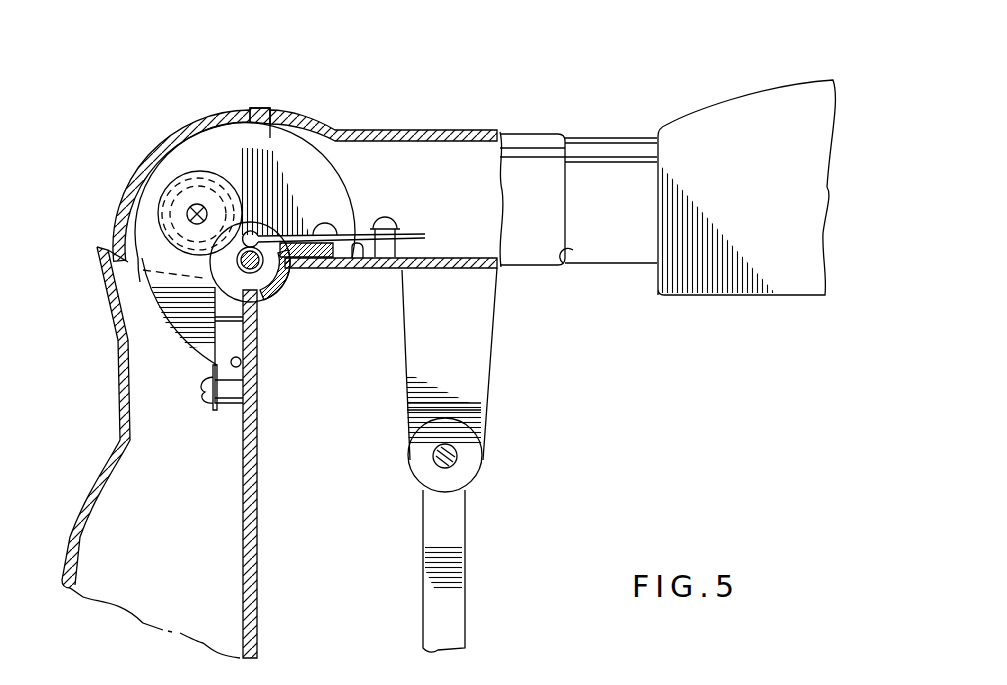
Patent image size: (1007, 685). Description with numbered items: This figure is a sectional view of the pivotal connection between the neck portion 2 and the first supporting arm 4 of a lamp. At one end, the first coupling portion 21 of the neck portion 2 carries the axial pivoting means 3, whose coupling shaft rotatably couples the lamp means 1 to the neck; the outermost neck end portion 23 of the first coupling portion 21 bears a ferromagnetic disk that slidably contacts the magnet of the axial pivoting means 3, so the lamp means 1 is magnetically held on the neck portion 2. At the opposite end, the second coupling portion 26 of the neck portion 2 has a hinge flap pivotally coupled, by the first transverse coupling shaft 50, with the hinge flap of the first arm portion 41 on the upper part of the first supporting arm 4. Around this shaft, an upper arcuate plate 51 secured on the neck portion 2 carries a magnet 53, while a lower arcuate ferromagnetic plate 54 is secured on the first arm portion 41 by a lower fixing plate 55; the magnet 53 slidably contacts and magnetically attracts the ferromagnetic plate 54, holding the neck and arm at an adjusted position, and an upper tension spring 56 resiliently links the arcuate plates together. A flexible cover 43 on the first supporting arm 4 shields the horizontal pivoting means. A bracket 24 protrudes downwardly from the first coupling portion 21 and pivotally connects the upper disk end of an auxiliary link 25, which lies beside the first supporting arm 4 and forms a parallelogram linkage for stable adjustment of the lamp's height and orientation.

The lamp means 1 is at (743, 85).
The neck portion 2 is at (518, 133).
The axial pivoting means 3 is at (565, 135).
The first supporting arm 4 is at (262, 483).
The first coupling portion 21 is at (462, 130).
The outermost neck end portion 23 is at (565, 262).
The bracket 24 is at (490, 370).
The auxiliary link 25 is at (467, 592).
The second coupling portion 26 is at (360, 267).
The first arm portion 41 is at (243, 360).
The flexible cover 43 is at (90, 483).
The first transverse coupling shaft 50 is at (263, 290).
The upper arcuate plate 51 is at (323, 190).
The magnet 53 is at (207, 187).
The lower arcuate ferromagnetic plate 54 is at (160, 250).
The lower fixing plate 55 is at (213, 371).
The upper tension spring 56 is at (338, 250).